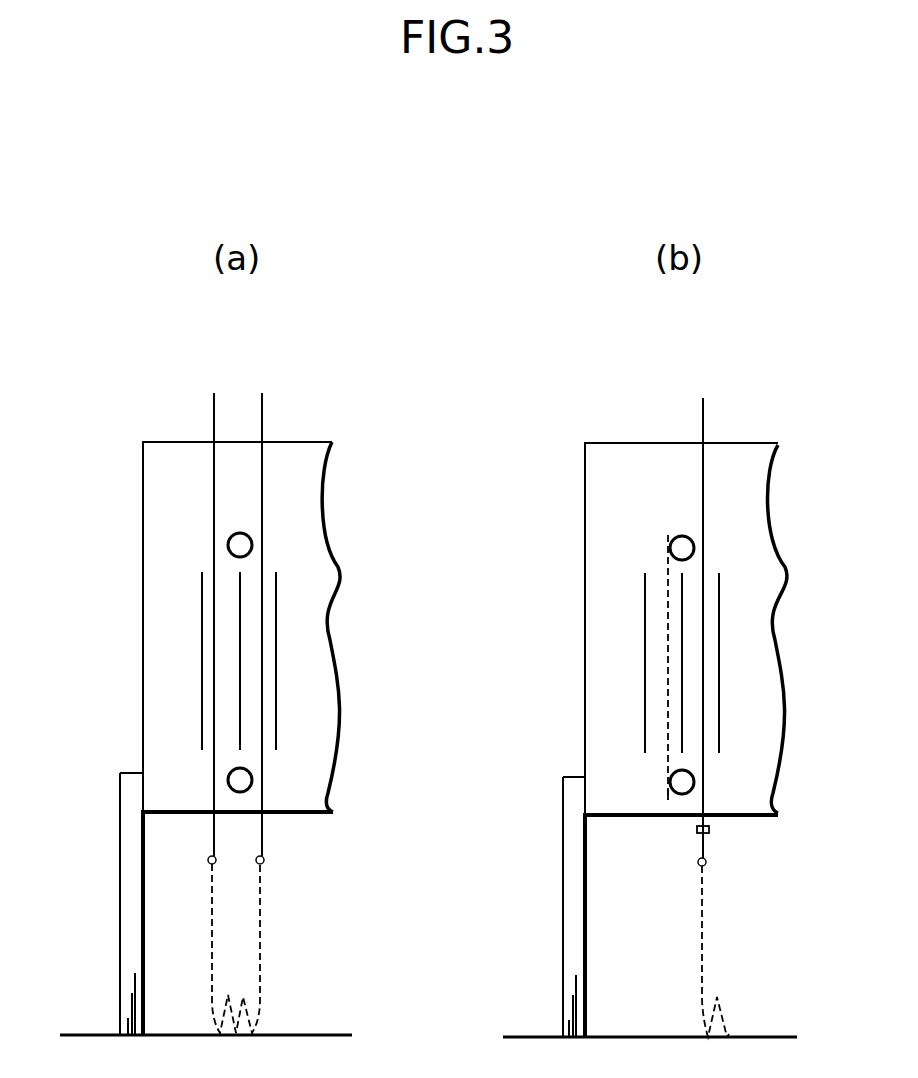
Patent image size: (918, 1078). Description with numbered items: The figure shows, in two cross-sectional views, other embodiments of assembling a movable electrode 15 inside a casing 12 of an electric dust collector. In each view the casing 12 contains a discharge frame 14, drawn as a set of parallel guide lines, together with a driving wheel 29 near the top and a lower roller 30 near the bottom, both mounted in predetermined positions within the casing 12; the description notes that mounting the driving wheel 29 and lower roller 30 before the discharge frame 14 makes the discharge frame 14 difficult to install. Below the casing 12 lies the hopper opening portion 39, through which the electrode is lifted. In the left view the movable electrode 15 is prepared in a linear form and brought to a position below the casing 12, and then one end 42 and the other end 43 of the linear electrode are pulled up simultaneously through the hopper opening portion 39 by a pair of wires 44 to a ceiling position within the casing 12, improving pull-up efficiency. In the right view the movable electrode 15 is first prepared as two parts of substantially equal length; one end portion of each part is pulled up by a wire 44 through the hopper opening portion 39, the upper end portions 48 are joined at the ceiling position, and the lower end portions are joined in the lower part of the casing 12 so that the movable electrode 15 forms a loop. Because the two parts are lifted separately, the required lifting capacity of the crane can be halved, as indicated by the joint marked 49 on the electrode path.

The casing 12 is at (320, 590).
The discharge frame 14 is at (277, 680).
The movable electrode 15 is at (260, 932).
The driving wheel 29 is at (245, 543).
The lower roller 30 is at (245, 778).
The hopper opening portion 39 is at (303, 815).
The one end of the linear movable electrode 42 is at (208, 860).
The other end of the linear movable electrode 43 is at (264, 860).
The wire 44 is at (214, 413).
The upper end portion 48 is at (668, 535).
The auxiliary thread end 49 is at (668, 795).